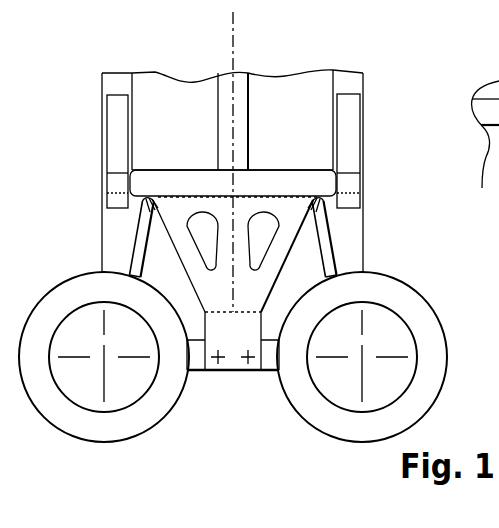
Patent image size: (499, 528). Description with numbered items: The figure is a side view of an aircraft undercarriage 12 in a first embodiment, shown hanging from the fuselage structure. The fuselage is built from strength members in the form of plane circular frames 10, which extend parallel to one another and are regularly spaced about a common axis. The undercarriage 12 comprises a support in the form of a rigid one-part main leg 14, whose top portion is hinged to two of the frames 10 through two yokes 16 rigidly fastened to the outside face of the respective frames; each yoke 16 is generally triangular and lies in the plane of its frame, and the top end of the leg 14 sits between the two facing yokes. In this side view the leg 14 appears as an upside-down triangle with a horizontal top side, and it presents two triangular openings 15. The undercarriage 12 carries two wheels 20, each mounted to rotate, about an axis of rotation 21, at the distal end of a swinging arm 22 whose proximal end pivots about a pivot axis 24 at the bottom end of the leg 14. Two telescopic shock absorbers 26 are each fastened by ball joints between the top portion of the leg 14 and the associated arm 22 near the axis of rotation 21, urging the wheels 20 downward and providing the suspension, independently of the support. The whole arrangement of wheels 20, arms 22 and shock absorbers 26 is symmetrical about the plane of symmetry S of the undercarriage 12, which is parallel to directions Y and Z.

The plane of symmetry S is at (236, 33).
The frames 10 is at (118, 82).
The undercarriage 12 is at (383, 90).
The leg 14 is at (276, 188).
The triangular openings 15 is at (255, 246).
The yokes 16 is at (117, 110).
The wheels 20 is at (108, 423).
The axes of rotation 21 is at (101, 356).
The swinging arms 22 is at (198, 373).
The pivot axes 24 is at (218, 366).
The shock absorbers 26 is at (134, 260).